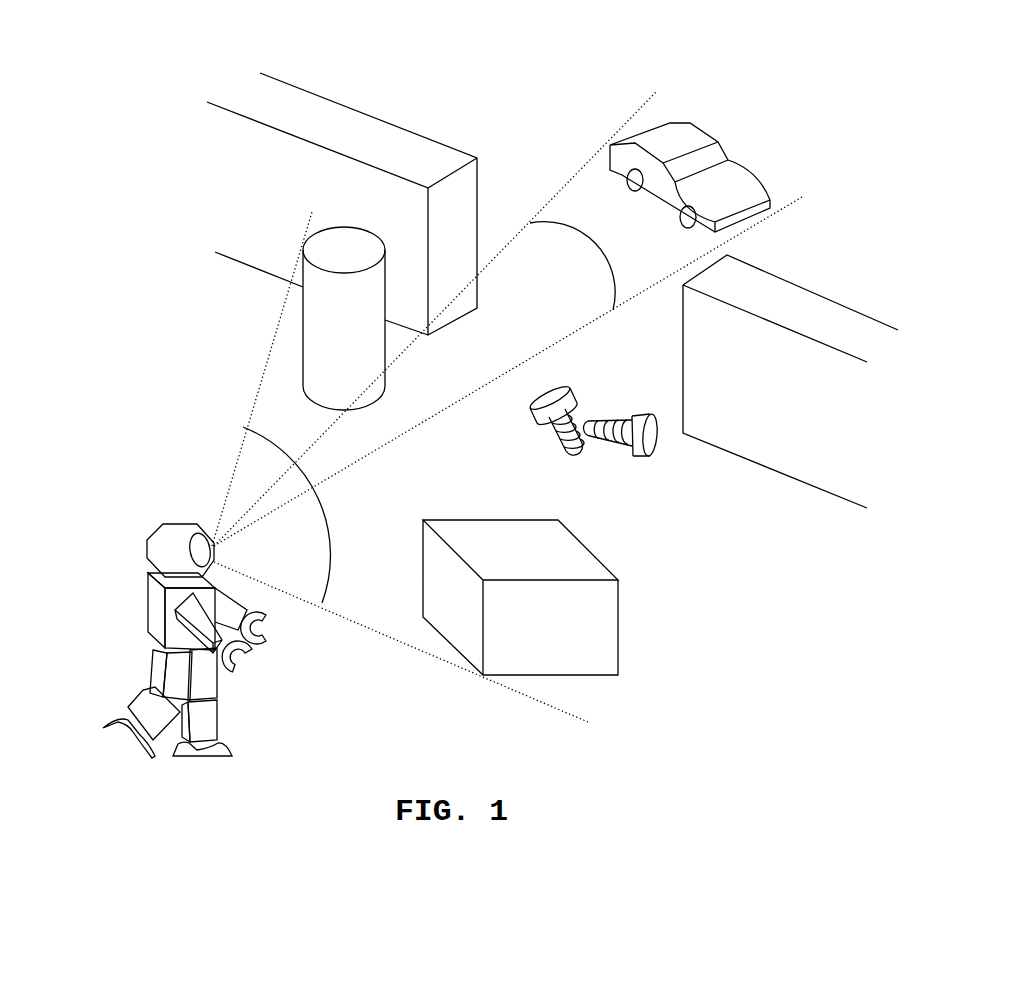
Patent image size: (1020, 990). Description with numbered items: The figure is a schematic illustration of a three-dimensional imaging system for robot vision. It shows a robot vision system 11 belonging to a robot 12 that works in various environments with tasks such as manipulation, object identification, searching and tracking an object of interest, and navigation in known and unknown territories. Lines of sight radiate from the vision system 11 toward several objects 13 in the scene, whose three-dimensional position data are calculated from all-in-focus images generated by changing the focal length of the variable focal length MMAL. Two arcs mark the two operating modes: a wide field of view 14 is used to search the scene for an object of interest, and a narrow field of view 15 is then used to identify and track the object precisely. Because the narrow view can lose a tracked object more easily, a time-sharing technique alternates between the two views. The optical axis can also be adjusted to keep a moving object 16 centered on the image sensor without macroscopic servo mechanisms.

The robot vision system 11 is at (180, 548).
The robot 12 is at (140, 662).
The objects 13 is at (645, 457).
The wide field of view 14 is at (327, 580).
The narrow field of view 15 is at (568, 223).
The moving object 16 is at (758, 172).